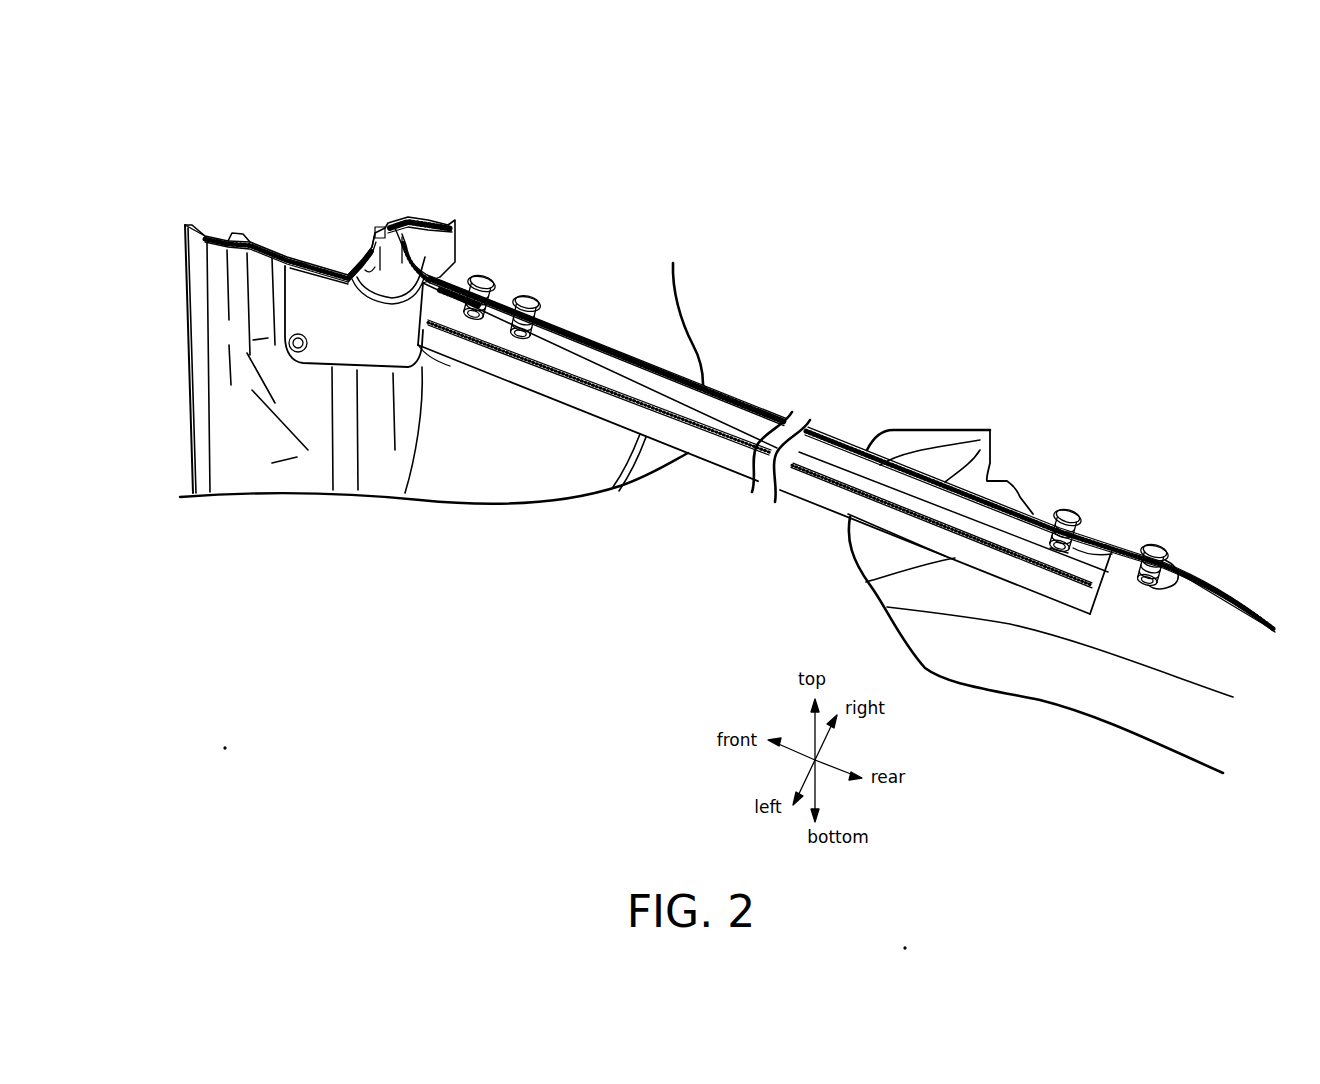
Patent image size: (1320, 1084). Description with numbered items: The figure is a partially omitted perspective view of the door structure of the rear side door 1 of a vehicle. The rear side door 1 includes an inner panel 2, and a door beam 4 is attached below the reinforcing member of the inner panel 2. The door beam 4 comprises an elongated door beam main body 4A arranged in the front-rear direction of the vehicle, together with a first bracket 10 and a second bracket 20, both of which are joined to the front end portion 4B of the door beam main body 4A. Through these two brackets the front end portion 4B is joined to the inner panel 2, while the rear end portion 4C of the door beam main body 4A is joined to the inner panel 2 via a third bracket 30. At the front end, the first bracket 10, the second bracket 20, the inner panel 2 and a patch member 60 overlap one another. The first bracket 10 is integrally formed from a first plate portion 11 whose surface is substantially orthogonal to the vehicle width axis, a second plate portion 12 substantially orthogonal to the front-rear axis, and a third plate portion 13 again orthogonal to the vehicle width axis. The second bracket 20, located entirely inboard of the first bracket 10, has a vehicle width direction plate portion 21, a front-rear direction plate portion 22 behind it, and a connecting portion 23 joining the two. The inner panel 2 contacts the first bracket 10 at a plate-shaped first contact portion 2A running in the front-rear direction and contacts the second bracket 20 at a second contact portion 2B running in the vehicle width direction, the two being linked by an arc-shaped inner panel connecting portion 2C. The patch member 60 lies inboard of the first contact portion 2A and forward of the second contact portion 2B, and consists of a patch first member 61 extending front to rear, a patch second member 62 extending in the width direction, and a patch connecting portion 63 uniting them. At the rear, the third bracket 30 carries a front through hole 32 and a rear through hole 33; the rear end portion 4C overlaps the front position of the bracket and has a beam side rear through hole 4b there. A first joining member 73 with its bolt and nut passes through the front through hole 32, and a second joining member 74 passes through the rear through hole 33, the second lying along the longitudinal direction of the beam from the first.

The rear side door 1 is at (951, 295).
The inner panel 2 is at (466, 240).
The first contact portion 2A is at (287, 252).
The second contact portion 2B is at (374, 230).
The inner panel connecting portion 2C is at (342, 260).
The door beam 4 is at (768, 392).
The door beam main body 4A is at (813, 488).
The front end portion 4B is at (478, 358).
The rear end portion 4C is at (1067, 588).
The beam side rear through hole 4b is at (1103, 547).
The first bracket 10 is at (387, 285).
The first plate portion 11 is at (327, 345).
The second plate portion 12 is at (420, 290).
The third plate portion 13 is at (433, 293).
The second bracket 20 is at (452, 266).
The vehicle width direction plate portion 21 is at (378, 238).
The front-rear direction plate portion 22 is at (510, 299).
The connecting portion 23 is at (400, 258).
The third bracket 30 is at (1184, 556).
The front through hole 32 is at (1069, 549).
The rear through hole 33 is at (1150, 586).
The patch member 60 is at (307, 282).
The patch first member 61 is at (292, 255).
The patch second member 62 is at (353, 262).
The patch connecting portion 63 is at (307, 258).
The first joining member 73 is at (1063, 512).
The second joining member 74 is at (1156, 549).